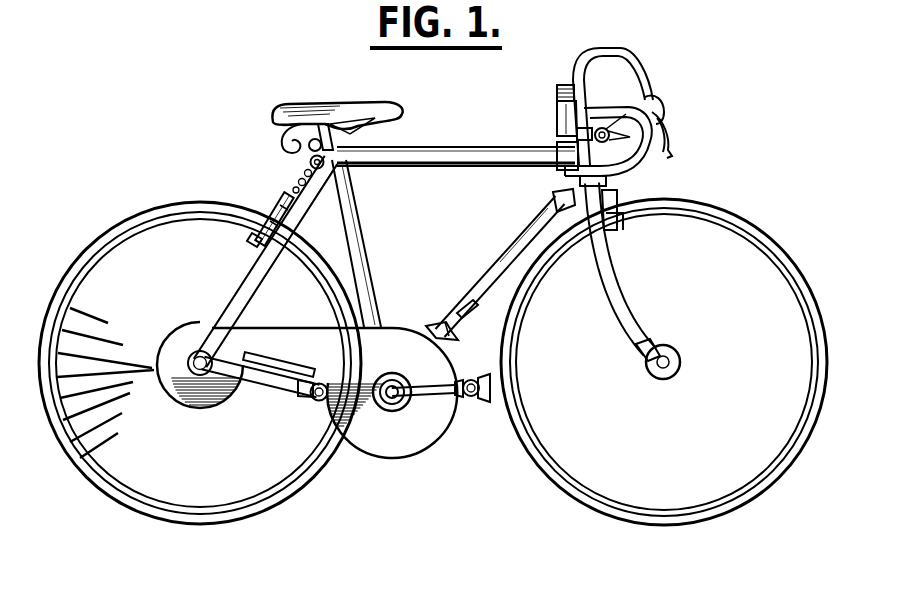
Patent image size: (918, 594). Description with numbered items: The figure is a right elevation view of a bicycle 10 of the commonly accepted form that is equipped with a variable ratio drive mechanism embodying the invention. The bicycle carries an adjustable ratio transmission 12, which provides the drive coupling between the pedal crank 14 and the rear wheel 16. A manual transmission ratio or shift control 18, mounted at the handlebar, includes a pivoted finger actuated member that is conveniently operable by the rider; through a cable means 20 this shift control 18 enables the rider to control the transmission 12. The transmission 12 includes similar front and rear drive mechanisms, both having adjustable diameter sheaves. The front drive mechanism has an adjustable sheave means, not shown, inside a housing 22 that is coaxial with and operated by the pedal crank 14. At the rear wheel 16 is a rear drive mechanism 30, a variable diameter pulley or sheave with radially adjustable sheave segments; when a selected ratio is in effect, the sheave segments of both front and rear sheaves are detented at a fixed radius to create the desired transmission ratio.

The bicycle 10 is at (735, 152).
The adjustable ratio transmission 12 is at (358, 457).
The pedal crank 14 is at (438, 398).
The rear wheel 16 is at (192, 525).
The shift control 18 is at (556, 96).
The cable means 20 is at (447, 335).
The housing 22 is at (400, 437).
The rear drive mechanism 30 is at (173, 323).